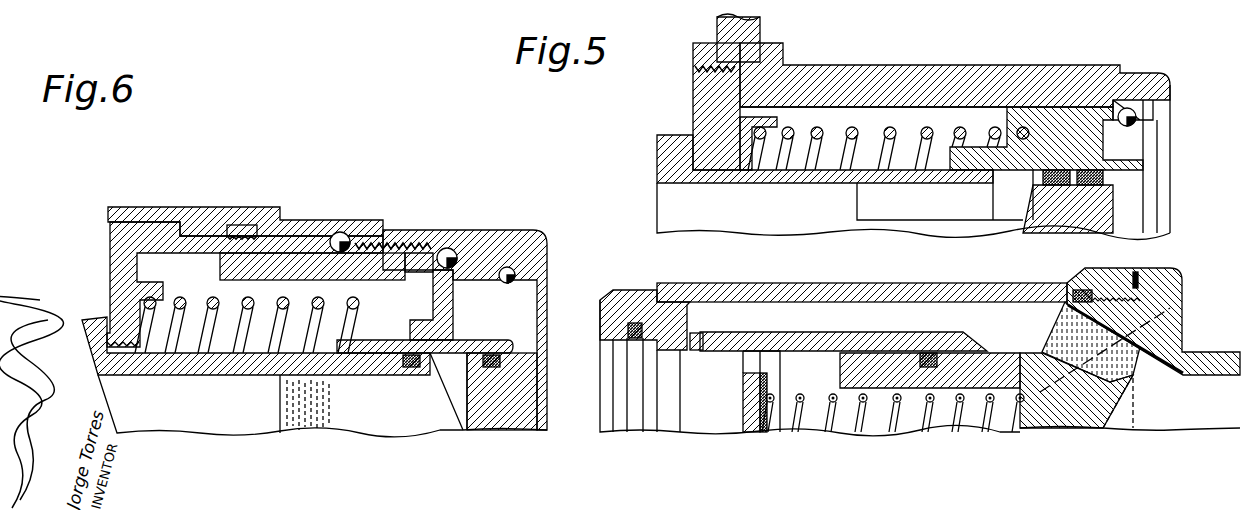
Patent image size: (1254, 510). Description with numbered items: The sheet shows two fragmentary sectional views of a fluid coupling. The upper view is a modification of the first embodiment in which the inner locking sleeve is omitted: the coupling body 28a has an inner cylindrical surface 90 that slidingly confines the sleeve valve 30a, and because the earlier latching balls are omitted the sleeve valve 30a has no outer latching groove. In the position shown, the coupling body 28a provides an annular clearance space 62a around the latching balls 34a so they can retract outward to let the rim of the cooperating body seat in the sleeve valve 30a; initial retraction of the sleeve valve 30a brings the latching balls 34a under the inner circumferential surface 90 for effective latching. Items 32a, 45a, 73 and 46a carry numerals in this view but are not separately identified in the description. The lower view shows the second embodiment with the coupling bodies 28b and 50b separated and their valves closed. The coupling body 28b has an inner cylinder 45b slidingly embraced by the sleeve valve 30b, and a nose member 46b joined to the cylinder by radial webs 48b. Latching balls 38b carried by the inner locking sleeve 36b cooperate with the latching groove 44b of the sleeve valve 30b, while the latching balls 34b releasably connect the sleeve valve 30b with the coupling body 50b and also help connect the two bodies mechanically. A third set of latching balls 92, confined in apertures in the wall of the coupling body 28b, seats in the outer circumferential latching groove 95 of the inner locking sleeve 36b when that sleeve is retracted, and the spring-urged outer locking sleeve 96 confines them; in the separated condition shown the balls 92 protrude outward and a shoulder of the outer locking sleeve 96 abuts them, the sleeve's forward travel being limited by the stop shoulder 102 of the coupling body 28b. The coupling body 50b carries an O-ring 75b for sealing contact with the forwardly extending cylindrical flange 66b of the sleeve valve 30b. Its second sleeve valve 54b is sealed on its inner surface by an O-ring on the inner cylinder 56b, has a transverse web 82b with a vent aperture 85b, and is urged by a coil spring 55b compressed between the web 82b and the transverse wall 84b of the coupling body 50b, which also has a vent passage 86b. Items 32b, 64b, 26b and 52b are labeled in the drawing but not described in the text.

In FIG. 6, the coupling body 28b is at (110, 225).
In FIG. 6, the outer locking sleeve 96 is at (224, 207).
In FIG. 6, the outer circumferential stop shoulder 102 is at (330, 236).
In FIG. 6, the latching balls 92 is at (342, 232).
In FIG. 6, the outer circumferential latching groove 95 is at (447, 248).
In FIG. 6, the latching balls 38b is at (450, 231).
In FIG. 6, the latching balls 34b is at (512, 268).
In FIG. 6, the spring 32b is at (217, 303).
In FIG. 6, the inner locking sleeve 36b is at (258, 282).
In FIG. 6, the shoulder 64b is at (410, 275).
In FIG. 6, the latching groove 44b is at (455, 283).
In FIG. 6, the forwardly extending cylindrical flange 66b is at (490, 340).
In FIG. 6, the inner cylinder 45b is at (260, 373).
In FIG. 6, the sleeve valve 30b is at (445, 345).
In FIG. 6, the nose member 46b is at (485, 413).
In FIG. 5, the spring 32a is at (853, 130).
In FIG. 5, the coupling body 28a is at (923, 65).
In FIG. 5, the inner cylindrical surface 90 is at (948, 107).
In FIG. 5, the sleeve valve 30a is at (1050, 122).
In FIG. 5, the annular clearance space 62a is at (1128, 108).
In FIG. 5, the latching balls 34a is at (1168, 92).
In FIG. 5, the base plate 45a is at (840, 184).
In FIG. 5, the seal rings 73 is at (1048, 184).
In FIG. 5, the end block 46a is at (1098, 223).
In FIG. 5, the end block 52b is at (640, 290).
In FIG. 5, the coupling body 50b is at (890, 283).
In FIG. 5, the radial webs 48b is at (1142, 268).
In FIG. 5, the O-ring 75b is at (630, 340).
In FIG. 5, the stop ring 26b is at (695, 351).
In FIG. 5, the vent aperture 85b is at (753, 368).
In FIG. 5, the transverse web 82b is at (745, 413).
In FIG. 5, the second sleeve valve 54b is at (900, 333).
In FIG. 5, the inner cylinder 56b is at (998, 353).
In FIG. 5, the vent passage 86b is at (1183, 327).
In FIG. 5, the coil spring 55b is at (933, 428).
In FIG. 5, the transverse wall 84b is at (1037, 413).